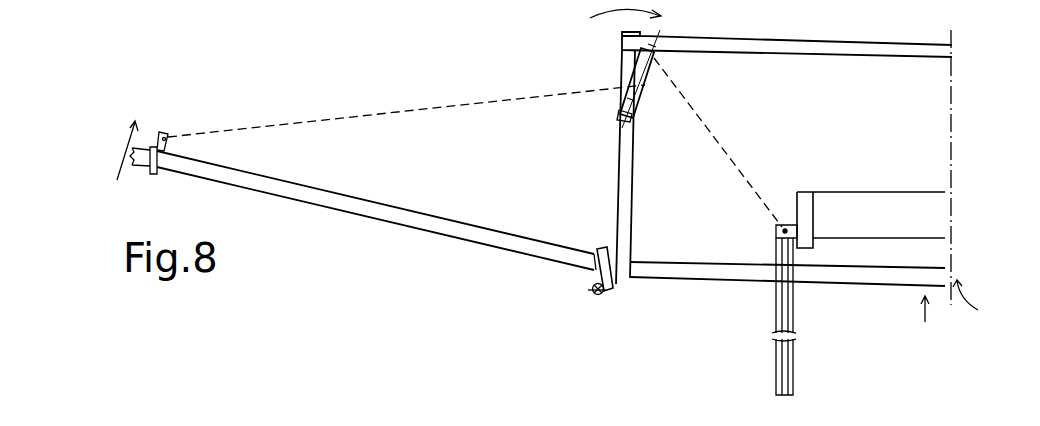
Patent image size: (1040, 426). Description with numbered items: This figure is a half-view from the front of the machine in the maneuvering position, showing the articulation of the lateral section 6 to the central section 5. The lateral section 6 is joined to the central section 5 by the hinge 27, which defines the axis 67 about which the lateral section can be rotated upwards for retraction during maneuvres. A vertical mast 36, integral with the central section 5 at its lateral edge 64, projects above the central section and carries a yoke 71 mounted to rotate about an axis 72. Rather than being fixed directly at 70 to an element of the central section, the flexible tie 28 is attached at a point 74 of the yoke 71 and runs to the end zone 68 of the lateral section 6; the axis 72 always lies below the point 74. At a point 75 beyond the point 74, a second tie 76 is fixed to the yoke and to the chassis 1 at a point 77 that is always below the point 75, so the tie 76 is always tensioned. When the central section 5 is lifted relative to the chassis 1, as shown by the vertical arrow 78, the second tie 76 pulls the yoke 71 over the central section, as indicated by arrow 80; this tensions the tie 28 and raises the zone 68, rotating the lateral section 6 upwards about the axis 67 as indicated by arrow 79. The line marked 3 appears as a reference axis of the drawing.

The chassis 1 is at (928, 222).
The axis of rotation 3 is at (975, 178).
The central section 5 is at (714, 272).
The lateral section 6 is at (366, 212).
The hinge 27 is at (590, 297).
The tie 28 is at (357, 125).
The mast 36 is at (632, 207).
The lateral edge 64 is at (622, 288).
The axis 67 is at (600, 297).
The zone 68 is at (173, 121).
The fixing point 70 is at (606, 66).
The yoke 71 is at (650, 80).
The axis 72 is at (624, 118).
The point 74 is at (623, 97).
The point 75 is at (653, 62).
The second tie 76 is at (711, 144).
The point 77 is at (782, 224).
The vertical arrow 78 is at (898, 317).
The arrow 79 is at (121, 151).
The arrow 80 is at (621, 12).